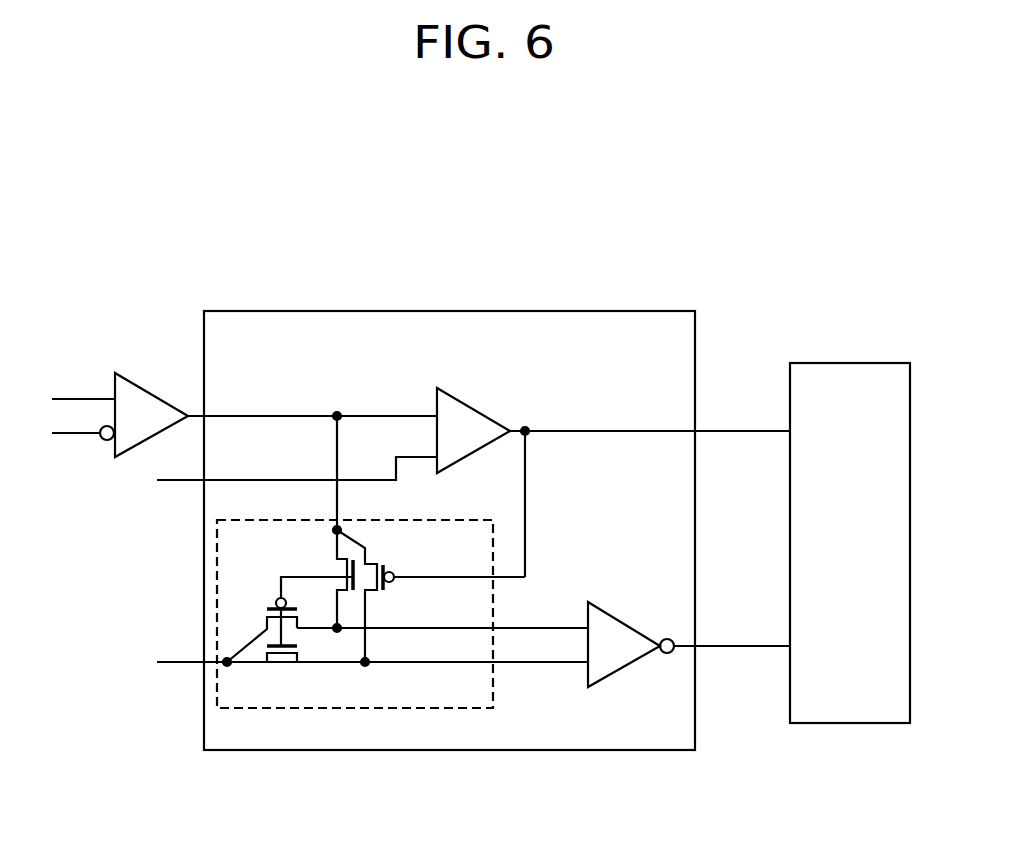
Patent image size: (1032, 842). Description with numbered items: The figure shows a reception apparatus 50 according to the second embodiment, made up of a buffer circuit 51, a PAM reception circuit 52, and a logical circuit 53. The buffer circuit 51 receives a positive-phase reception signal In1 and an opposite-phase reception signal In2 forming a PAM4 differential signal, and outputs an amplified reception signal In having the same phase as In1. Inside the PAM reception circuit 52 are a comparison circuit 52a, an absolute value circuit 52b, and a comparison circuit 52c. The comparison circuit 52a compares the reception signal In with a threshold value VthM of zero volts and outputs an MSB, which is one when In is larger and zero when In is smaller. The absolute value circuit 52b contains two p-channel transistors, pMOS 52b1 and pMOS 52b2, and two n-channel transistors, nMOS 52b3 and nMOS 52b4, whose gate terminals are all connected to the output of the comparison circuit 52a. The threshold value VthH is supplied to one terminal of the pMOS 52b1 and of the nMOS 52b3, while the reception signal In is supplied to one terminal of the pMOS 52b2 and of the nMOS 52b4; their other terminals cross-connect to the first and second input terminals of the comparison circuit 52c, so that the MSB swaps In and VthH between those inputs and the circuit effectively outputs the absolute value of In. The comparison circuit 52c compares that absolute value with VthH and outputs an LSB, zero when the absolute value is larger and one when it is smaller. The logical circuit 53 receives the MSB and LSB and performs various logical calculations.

The reception apparatus 50 is at (889, 238).
The buffer circuit 51 is at (132, 378).
The PAM reception circuit 52 is at (608, 309).
The comparison circuit 52a is at (470, 403).
The absolute value circuit 52b is at (430, 517).
The pMOS 52b1 is at (270, 602).
The pMOS 52b2 is at (373, 565).
The nMOS 52b3 is at (297, 657).
The nMOS 52b4 is at (337, 553).
The comparison circuit 52c is at (600, 603).
The logical circuit 53 is at (834, 362).